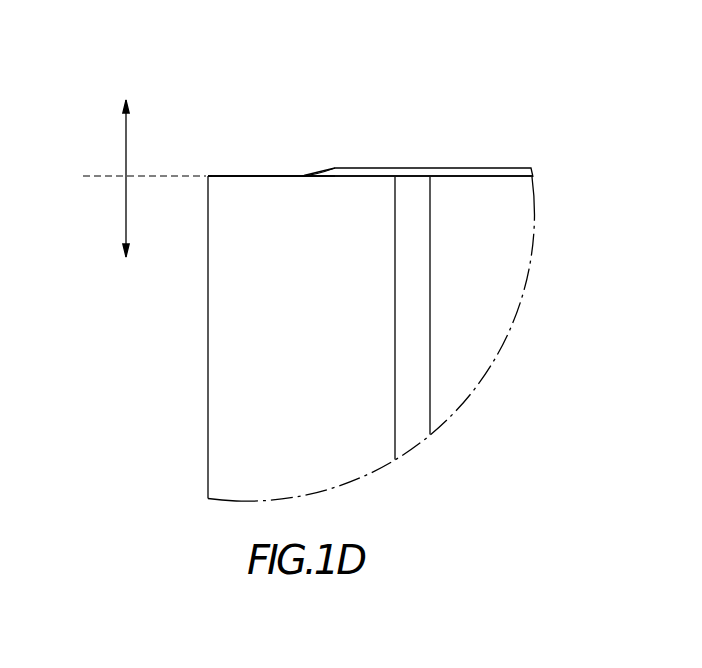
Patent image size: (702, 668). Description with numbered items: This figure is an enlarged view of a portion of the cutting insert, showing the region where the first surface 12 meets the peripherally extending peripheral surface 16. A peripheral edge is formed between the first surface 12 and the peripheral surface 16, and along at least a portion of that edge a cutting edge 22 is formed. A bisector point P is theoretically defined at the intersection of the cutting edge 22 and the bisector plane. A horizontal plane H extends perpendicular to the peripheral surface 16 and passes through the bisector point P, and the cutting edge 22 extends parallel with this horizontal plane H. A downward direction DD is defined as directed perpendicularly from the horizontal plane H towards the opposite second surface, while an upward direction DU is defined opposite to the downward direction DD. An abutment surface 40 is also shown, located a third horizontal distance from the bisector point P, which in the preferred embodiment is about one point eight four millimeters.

The first surface 12 is at (260, 115).
The peripheral surface 16 is at (301, 332).
The cutting edge 22 is at (262, 175).
The abutment surface 40 is at (418, 168).
The bisector point P is at (208, 174).
The horizontal plane H is at (135, 175).
The upward direction DU is at (109, 138).
The downward direction DD is at (107, 216).